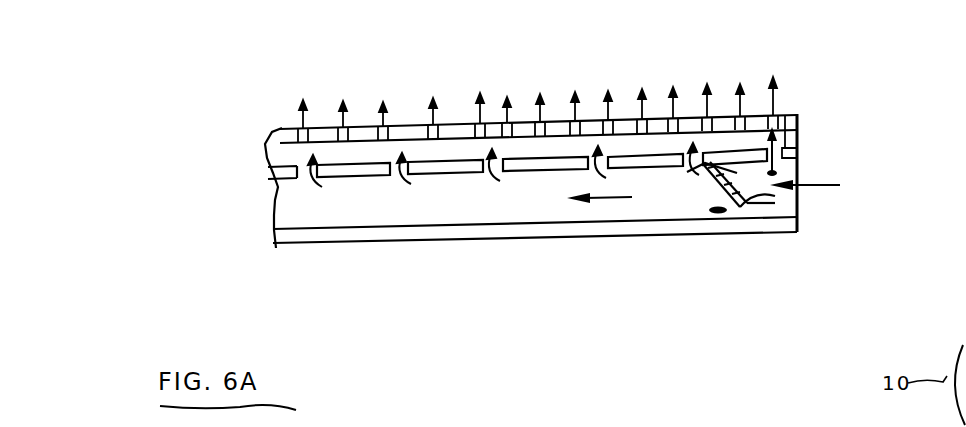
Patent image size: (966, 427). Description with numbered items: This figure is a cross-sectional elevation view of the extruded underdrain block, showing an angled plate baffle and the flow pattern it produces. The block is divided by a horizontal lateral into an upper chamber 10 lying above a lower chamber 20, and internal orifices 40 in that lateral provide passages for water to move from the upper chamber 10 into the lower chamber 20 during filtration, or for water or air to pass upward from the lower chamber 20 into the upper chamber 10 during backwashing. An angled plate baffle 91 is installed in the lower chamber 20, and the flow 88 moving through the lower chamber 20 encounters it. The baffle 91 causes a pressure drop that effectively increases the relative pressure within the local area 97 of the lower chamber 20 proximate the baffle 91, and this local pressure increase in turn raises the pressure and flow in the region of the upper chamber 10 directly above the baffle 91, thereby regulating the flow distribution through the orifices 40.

The upper chamber 10 is at (268, 154).
The lower chamber 20 is at (273, 212).
The internal orifice 40 is at (388, 184).
The flow 88 is at (823, 187).
The plate baffle 91 is at (778, 195).
The local area 97 is at (770, 170).